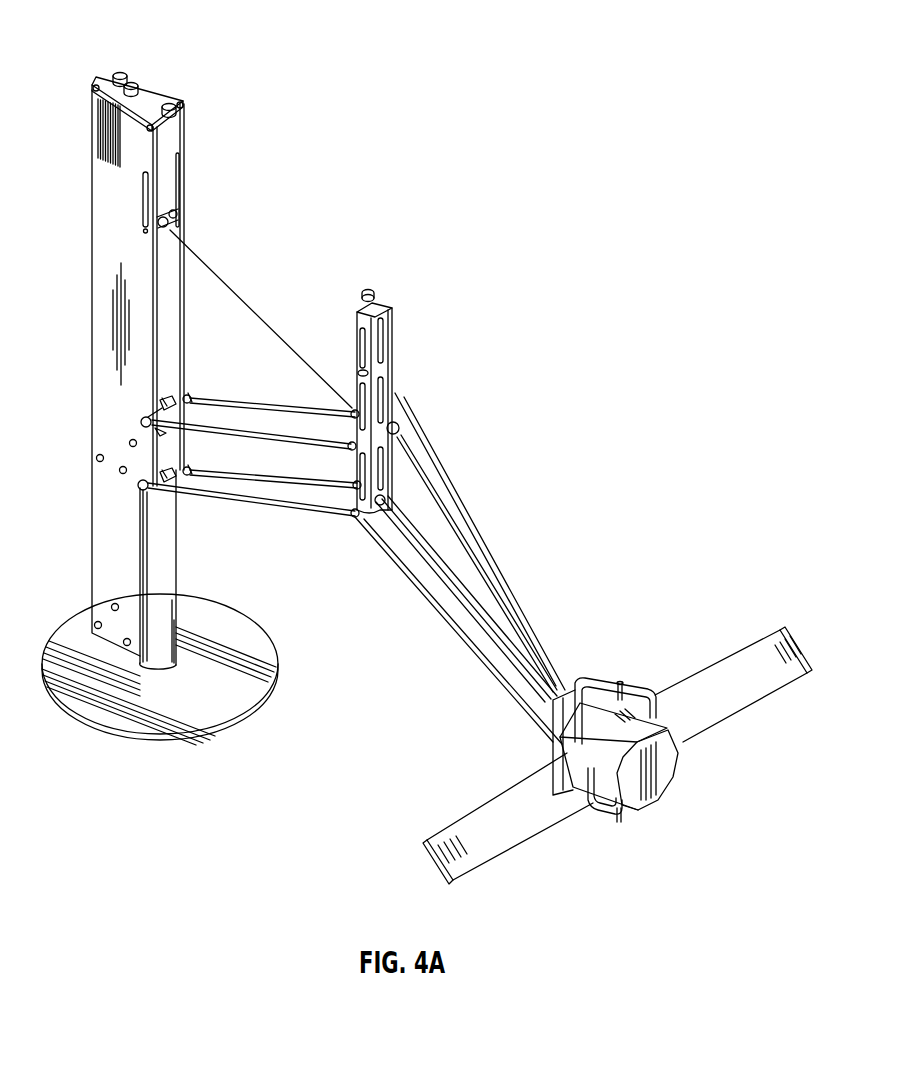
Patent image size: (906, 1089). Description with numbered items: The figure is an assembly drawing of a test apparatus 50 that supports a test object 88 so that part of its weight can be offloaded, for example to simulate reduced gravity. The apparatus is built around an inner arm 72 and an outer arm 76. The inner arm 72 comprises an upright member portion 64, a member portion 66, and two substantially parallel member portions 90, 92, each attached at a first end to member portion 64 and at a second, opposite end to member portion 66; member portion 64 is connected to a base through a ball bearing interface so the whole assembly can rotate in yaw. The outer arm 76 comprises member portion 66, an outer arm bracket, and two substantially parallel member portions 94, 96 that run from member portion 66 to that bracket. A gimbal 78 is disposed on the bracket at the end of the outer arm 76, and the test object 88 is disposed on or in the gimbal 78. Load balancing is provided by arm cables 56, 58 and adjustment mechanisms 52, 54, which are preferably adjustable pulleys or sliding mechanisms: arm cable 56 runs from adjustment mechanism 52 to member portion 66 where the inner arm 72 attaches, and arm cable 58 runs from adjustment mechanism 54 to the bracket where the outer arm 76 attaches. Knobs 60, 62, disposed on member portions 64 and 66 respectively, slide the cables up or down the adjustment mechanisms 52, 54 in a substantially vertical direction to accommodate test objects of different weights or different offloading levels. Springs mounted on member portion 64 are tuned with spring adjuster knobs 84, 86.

The test apparatus 50 is at (600, 73).
The adjustment mechanism 52 is at (165, 220).
The adjustment mechanism 54 is at (380, 368).
The arm cable 56 is at (262, 318).
The arm cable 58 is at (408, 423).
The knob 60 is at (172, 104).
The knob 62 is at (371, 291).
The member portion 64 is at (103, 197).
The member portion 66 is at (393, 338).
The inner arm 72 is at (249, 473).
The outer arm 76 is at (441, 628).
The gimbal 78 is at (603, 690).
The spring adjuster knob 84 is at (118, 73).
The spring adjuster knob 86 is at (134, 82).
The test object 88 is at (668, 763).
The member portion 90 is at (300, 437).
The member portion 92 is at (300, 506).
The member portion 94 is at (393, 498).
The member portion 96 is at (453, 588).